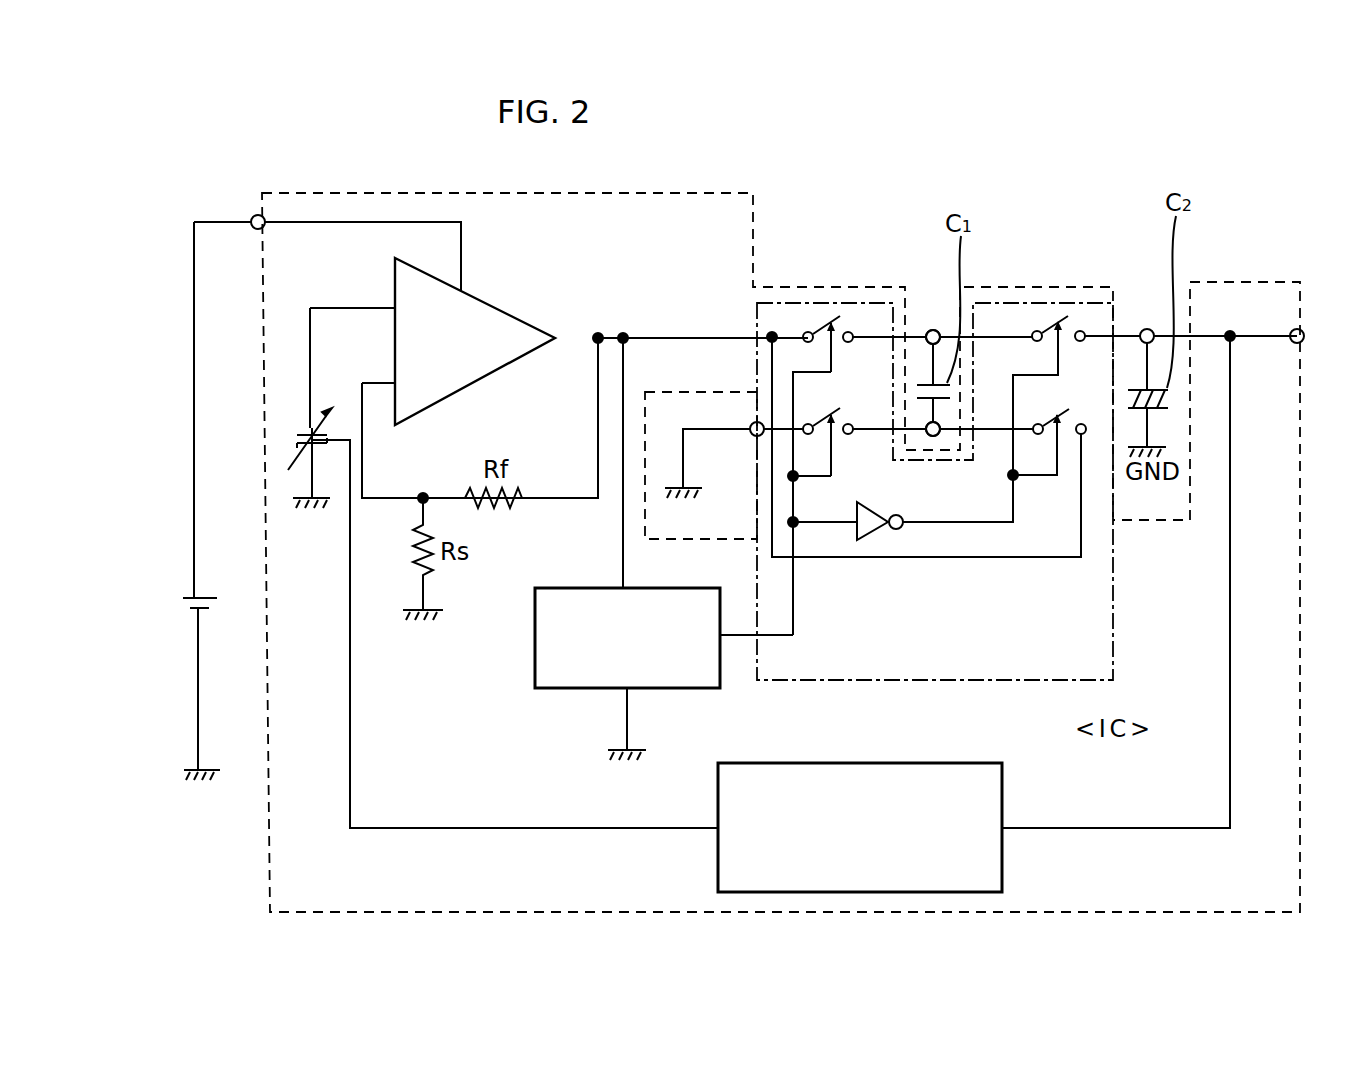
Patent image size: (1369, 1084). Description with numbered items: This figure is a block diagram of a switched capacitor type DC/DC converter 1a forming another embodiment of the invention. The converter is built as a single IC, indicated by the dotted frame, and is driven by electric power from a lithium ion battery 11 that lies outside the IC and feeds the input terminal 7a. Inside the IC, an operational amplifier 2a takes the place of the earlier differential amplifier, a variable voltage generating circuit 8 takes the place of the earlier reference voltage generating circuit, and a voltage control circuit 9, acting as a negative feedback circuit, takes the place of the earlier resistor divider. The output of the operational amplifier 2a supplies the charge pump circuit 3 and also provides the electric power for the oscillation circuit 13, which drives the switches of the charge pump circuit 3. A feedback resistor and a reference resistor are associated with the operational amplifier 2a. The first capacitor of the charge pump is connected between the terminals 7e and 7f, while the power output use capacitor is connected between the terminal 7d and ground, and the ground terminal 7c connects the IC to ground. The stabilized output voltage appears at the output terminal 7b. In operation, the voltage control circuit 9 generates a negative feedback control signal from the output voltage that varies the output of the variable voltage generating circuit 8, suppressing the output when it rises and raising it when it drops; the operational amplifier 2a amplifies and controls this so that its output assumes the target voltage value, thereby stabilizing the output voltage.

The switched capacitor type DC/DC converter 1a is at (848, 208).
The operational amplifier 2a is at (535, 326).
The charge pump circuit 3 is at (1055, 303).
The input terminal 7a is at (254, 216).
The output terminal 7b is at (1297, 329).
The ground terminal 7c is at (750, 430).
The terminal 7d is at (1147, 329).
The terminal 7e is at (933, 330).
The terminal 7f is at (933, 437).
The variable voltage generating circuit 8 is at (306, 432).
The voltage control circuit 9 is at (1002, 782).
The lithium ion battery 11 is at (190, 597).
The oscillation circuit 13 is at (552, 588).